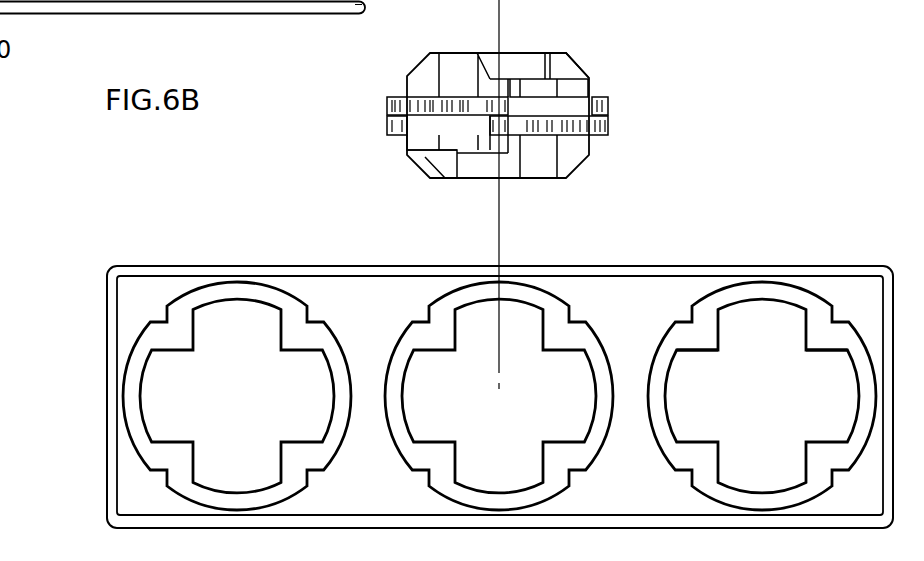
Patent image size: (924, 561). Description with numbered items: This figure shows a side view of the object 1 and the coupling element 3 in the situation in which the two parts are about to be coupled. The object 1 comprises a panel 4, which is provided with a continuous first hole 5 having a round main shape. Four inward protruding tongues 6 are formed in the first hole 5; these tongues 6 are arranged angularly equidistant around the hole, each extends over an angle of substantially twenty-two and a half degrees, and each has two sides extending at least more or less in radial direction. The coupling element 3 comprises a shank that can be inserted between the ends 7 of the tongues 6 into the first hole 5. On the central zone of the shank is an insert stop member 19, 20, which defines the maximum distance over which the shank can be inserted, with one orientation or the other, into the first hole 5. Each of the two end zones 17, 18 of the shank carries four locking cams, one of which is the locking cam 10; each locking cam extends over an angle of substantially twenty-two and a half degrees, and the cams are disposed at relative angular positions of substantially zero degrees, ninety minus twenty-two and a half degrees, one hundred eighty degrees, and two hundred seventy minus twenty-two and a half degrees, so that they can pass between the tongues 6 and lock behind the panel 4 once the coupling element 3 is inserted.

The object 1 is at (347, 19).
The coupling element 3 is at (33, 0).
The panel 4 is at (178, 0).
The first hole 5 is at (233, 340).
The tongues 6 is at (160, 453).
The ends of the tongues 7 is at (231, 0).
The locking cam 10 is at (428, 52).
The end zone of the shank 17 is at (482, 78).
The end zone of the shank 18 is at (422, 138).
The insert stop member 19 is at (387, 103).
The insert stop member 20 is at (590, 127).